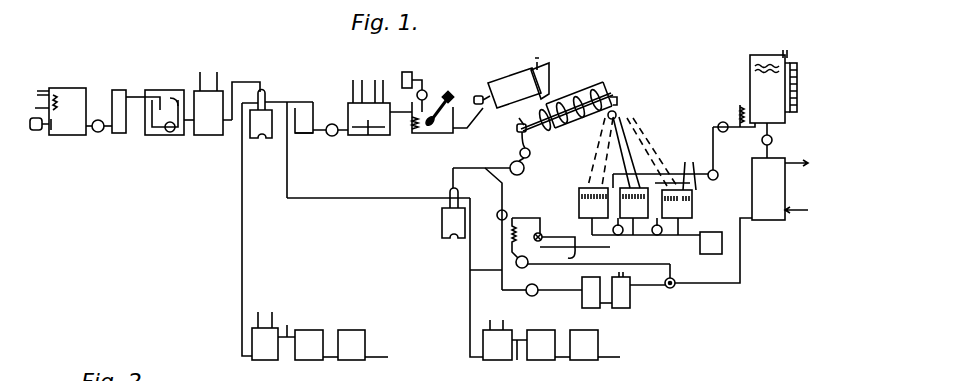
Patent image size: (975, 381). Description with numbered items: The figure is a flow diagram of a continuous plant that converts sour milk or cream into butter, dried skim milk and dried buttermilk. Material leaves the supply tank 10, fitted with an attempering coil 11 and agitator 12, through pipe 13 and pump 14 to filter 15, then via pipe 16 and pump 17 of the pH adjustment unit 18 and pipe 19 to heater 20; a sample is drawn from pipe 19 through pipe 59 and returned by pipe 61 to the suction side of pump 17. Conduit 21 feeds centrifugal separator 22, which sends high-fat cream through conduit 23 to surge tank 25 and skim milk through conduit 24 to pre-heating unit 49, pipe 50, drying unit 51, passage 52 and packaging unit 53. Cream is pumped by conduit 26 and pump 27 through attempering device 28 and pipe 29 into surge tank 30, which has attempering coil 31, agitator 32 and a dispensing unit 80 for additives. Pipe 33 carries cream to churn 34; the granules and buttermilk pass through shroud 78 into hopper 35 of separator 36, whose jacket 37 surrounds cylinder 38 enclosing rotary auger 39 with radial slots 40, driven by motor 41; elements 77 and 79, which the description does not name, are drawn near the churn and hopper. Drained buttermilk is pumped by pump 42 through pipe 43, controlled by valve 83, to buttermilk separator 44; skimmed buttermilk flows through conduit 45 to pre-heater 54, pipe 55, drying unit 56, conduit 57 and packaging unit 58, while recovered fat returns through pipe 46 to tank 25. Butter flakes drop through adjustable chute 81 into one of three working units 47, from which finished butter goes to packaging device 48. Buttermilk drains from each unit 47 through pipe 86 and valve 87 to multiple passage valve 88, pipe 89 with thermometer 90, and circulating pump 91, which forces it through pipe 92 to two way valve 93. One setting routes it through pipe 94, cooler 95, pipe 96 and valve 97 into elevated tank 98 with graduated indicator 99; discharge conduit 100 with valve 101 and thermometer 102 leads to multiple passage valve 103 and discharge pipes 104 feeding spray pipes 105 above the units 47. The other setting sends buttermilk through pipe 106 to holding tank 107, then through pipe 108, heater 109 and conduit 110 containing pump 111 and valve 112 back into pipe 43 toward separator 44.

The supply tank 10 is at (75, 88).
The attempering coil 11 is at (60, 92).
The agitator 12 is at (52, 135).
The pipe 13 is at (89, 130).
The pump 14 is at (99, 120).
The filter 15 is at (119, 134).
The pipe 16 is at (133, 96).
The pump 17 is at (168, 133).
The pH adjustment unit 18 is at (160, 90).
The pipe 19 is at (189, 122).
The heating unit 20 is at (210, 136).
The conduit 21 is at (246, 82).
The centrifugal separator 22 is at (263, 92).
The conduit 23 is at (300, 102).
The conduit 24 is at (242, 255).
The surge tank 25 is at (315, 104).
The conduit 26 is at (312, 135).
The pump 27 is at (333, 137).
The attempering device 28 is at (368, 136).
The pipe 29 is at (388, 100).
The surge tank 30 is at (430, 134).
The attempering coil 31 is at (414, 134).
The agitator 32 is at (444, 93).
The pipe 33 is at (469, 128).
The butter churn 34 is at (496, 80).
The hopper 35 is at (566, 96).
The butter flake and buttermilk separator 36 is at (524, 168).
The jacket 37 is at (590, 86).
The auger enclosing cylinder 38 is at (607, 85).
The rotary auger 39 is at (615, 98).
The radial slots 40 is at (560, 124).
The drive motor 41 is at (518, 113).
The pump 42 is at (530, 153).
The pipe 43 is at (453, 180).
The centrifugal buttermilk separator 44 is at (448, 203).
The conduit 45 is at (470, 288).
The pipe 46 is at (361, 198).
The butter holding and working devices 47 is at (635, 205).
The packaging and discharge device 48 is at (712, 254).
The pre-heating unit 49 is at (262, 360).
The pipe 50 is at (287, 325).
The drying unit 51 is at (308, 360).
The passage 52 is at (330, 358).
The packaging unit 53 is at (351, 330).
The pre-heater 54 is at (495, 360).
The pipe 55 is at (518, 360).
The drying unit 56 is at (541, 360).
The conduit 57 is at (564, 358).
The packaging unit 58 is at (600, 358).
The pipe 59 is at (180, 99).
The pipe 61 is at (168, 100).
The bearing 77 is at (478, 96).
The shroud 78 is at (548, 70).
The inlet 79 is at (536, 62).
The dispensing unit 80 is at (406, 72).
The adjustable chute 81 is at (616, 116).
The valve 83 is at (517, 129).
The pipe 86 is at (571, 259).
The valve 87 is at (646, 232).
The multiple passage valve 88 is at (544, 237).
The pipe 89 is at (535, 218).
The thermometer 90 is at (513, 226).
The circulating pump 91 is at (520, 268).
The pipe 92 is at (670, 268).
The two way valve 93 is at (673, 288).
The pipe 94 is at (742, 277).
The buttermilk cooler 95 is at (775, 190).
The pipe 96 is at (772, 150).
The valve 97 is at (772, 138).
The surge tank 98 is at (750, 58).
The graduated indicator 99 is at (797, 63).
The discharge conduit 100 is at (713, 147).
The valve 101 is at (720, 123).
The thermometer 102 is at (740, 105).
The multiple passage valve 103 is at (718, 174).
The discharge pipes 104 is at (690, 168).
The spray pipes 105 is at (597, 170).
The pipe 106 is at (650, 286).
The holding tank 107 is at (620, 308).
The pipe 108 is at (606, 303).
The heater 109 is at (582, 282).
The conduit 110 is at (483, 167).
The pump 111 is at (526, 292).
The valve 112 is at (497, 214).